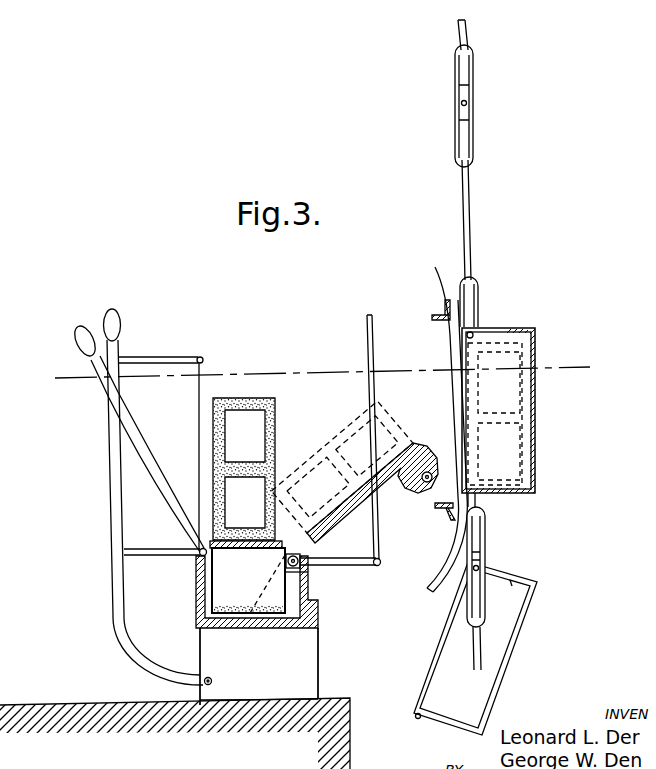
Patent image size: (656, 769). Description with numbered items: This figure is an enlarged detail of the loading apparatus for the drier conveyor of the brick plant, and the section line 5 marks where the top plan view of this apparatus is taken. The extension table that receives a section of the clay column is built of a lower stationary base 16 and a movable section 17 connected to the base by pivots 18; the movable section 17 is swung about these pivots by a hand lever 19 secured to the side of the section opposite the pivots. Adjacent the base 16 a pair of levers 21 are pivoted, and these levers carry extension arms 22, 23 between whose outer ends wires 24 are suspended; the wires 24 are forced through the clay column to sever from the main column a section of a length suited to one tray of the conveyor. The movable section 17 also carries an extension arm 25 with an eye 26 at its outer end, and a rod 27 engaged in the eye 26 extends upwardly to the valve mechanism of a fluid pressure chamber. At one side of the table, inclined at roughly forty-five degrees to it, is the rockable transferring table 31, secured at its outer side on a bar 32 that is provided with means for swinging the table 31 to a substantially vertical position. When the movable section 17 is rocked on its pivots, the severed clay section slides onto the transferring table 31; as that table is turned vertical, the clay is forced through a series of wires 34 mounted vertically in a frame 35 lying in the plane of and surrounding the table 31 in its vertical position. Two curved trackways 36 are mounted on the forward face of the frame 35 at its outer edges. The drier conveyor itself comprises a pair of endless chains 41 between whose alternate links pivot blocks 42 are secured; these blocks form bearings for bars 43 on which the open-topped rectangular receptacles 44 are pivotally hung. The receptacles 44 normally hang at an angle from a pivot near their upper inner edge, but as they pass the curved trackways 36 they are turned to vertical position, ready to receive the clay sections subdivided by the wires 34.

The section line 5— 5 is at (71, 381).
The base 16 is at (252, 629).
The movable section 17 is at (308, 583).
The pivots 18 is at (310, 573).
The hand lever 19 is at (86, 330).
The levers 21 is at (125, 627).
The extension arm 22 is at (170, 356).
The extension arm 23 is at (148, 548).
The wires 24 is at (198, 429).
The extension arm 25 is at (368, 567).
The eye 26 is at (380, 561).
The rod 27 is at (377, 508).
The transferring table 31 is at (338, 533).
The bar 32 is at (425, 483).
The wires 34 is at (450, 346).
The frame 35 is at (441, 313).
The curved trackways 36 is at (437, 264).
The endless chains 41 is at (471, 188).
The pivot blocks 42 is at (470, 115).
The bars 43 is at (476, 333).
The receptacles 44 is at (532, 340).